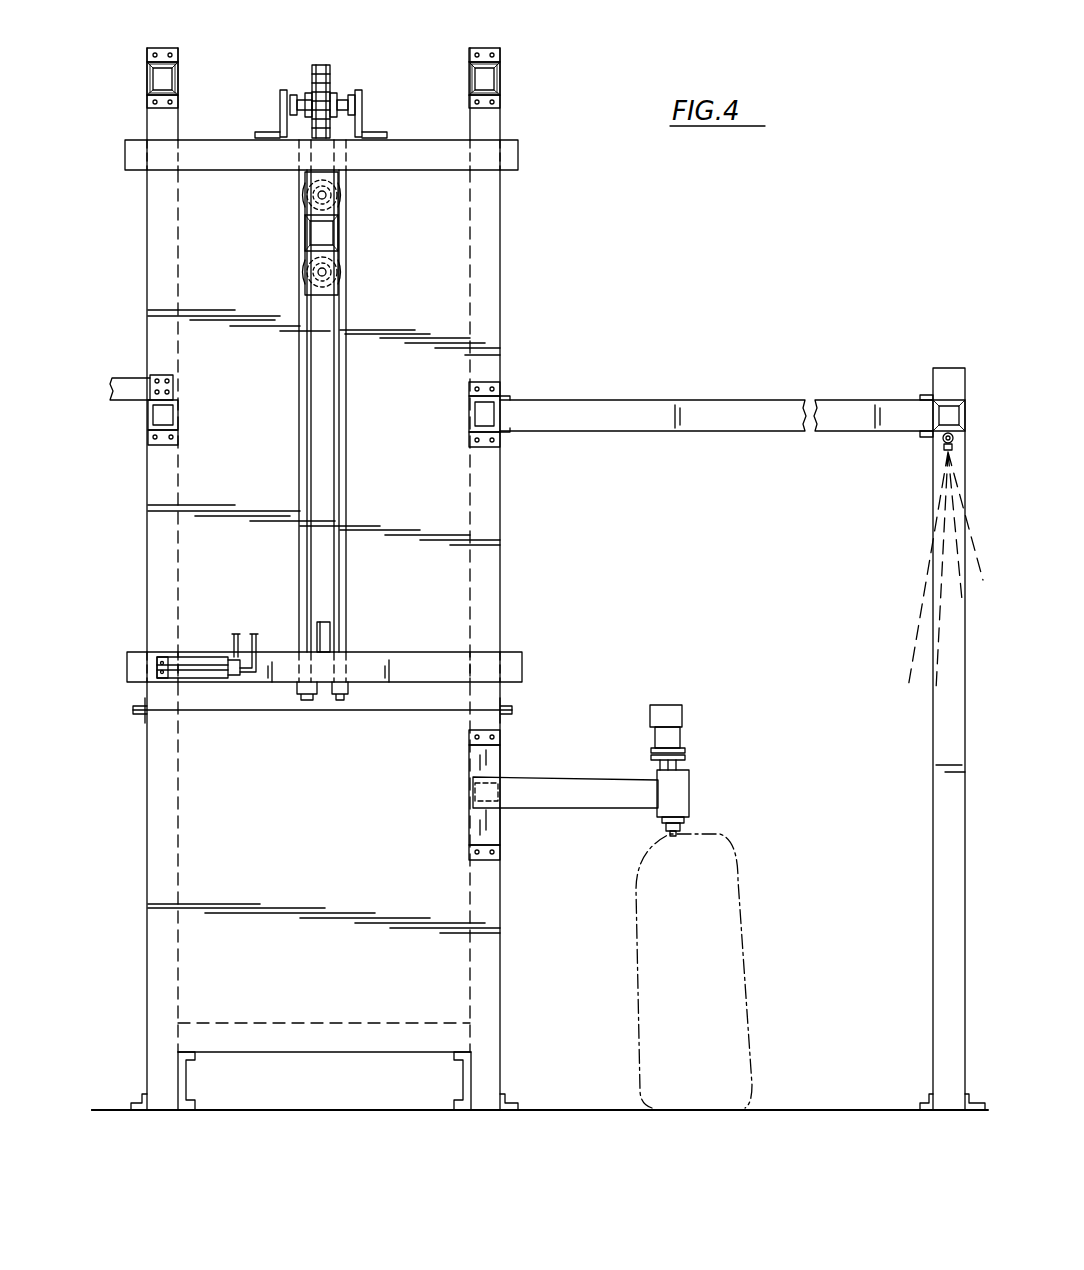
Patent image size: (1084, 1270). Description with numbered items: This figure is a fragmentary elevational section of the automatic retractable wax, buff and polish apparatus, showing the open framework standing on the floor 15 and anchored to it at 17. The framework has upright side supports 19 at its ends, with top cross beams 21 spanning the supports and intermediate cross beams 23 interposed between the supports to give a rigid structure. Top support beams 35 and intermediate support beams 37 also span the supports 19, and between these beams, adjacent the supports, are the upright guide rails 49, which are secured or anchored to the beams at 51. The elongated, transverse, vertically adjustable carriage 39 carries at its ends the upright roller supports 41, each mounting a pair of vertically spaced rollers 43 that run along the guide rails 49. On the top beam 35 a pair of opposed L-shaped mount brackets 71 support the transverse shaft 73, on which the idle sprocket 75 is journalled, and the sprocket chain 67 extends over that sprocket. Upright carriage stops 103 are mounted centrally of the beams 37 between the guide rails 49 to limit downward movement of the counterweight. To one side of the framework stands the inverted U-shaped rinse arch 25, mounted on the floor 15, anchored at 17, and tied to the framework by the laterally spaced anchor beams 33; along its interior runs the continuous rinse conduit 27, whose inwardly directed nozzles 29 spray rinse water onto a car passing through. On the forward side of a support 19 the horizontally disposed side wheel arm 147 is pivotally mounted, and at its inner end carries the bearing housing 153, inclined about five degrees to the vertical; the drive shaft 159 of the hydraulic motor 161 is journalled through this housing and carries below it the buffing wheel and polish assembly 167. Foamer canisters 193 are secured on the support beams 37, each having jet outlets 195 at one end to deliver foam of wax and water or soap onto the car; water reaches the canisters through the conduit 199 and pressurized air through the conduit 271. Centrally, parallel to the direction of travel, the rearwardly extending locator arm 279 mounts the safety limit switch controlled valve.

The floor 15 is at (104, 1108).
The anchor 17 is at (138, 1100).
The upright side support 19 is at (158, 998).
The top cross beam 21 is at (180, 78).
The intermediate cross beam 23 is at (180, 415).
The rinse arch 25 is at (932, 410).
The rinse conduit 27 is at (940, 443).
The nozzle 29 is at (943, 452).
The anchor beam 33 is at (735, 415).
The top support beam 35 is at (228, 156).
The intermediate support beam 37 is at (422, 668).
The carriage 39 is at (305, 234).
The roller support 41 is at (330, 295).
The roller 43 is at (348, 100).
The guide rail 49 is at (298, 416).
The rail anchor 51 is at (350, 690).
The sprocket chain 67 is at (322, 63).
The L-shaped mount bracket 71 is at (365, 120).
The transverse shaft 73 is at (288, 95).
The idle sprocket 75 is at (338, 92).
The carriage stop 103 is at (332, 628).
The side wheel arm 147 is at (574, 790).
The bearing housing 153 is at (690, 793).
The drive shaft 159 is at (690, 832).
The hydraulic motor 161 is at (686, 715).
The buffing wheel and polish assembly 167 is at (729, 1024).
The foamer canister 193 is at (197, 668).
The jet outlet 195 is at (162, 658).
The water conduit 199 is at (238, 636).
The air conduit 271 is at (272, 645).
The locator arm 279 is at (128, 380).